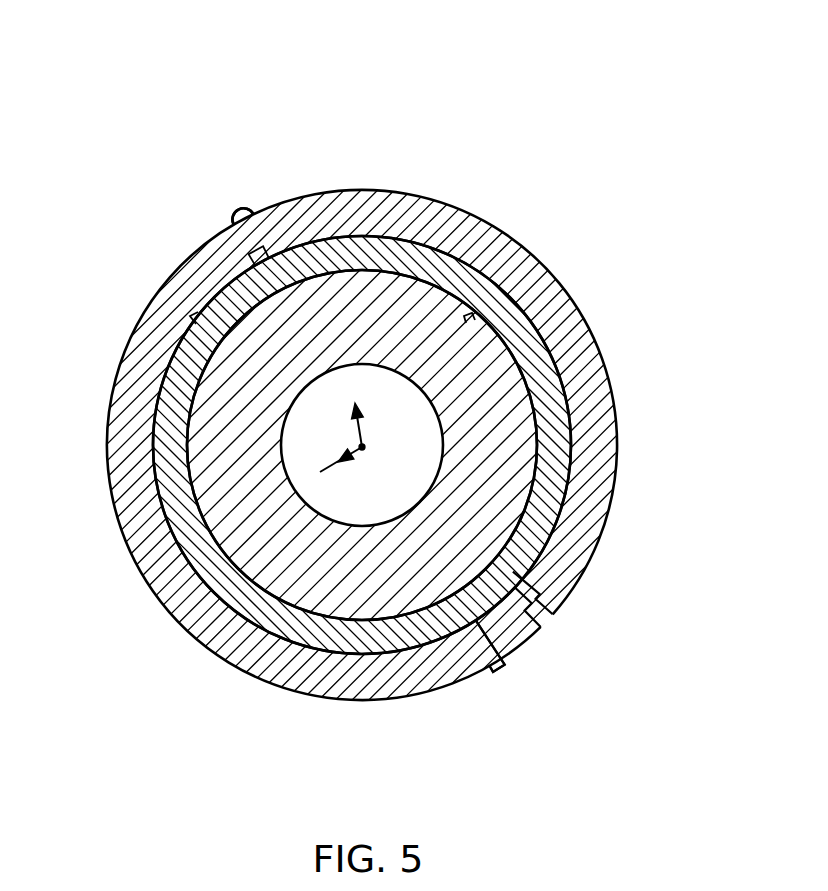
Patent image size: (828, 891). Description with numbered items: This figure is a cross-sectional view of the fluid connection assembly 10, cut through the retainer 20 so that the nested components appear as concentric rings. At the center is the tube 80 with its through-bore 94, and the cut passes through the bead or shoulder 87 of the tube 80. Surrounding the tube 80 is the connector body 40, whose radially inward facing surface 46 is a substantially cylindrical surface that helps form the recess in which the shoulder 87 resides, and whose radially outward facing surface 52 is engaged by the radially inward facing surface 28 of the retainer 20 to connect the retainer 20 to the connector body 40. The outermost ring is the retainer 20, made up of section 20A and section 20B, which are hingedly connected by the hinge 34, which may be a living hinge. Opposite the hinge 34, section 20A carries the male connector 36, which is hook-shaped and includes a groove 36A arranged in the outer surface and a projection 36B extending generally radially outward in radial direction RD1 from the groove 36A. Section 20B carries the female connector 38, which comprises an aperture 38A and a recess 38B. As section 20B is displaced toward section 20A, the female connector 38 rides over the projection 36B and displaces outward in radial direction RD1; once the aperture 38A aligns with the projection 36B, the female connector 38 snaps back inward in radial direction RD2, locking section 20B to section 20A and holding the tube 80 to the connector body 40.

The fluid connection assembly 10 is at (604, 112).
The retainer 20 is at (363, 414).
The section 20A is at (363, 414).
The section 20B is at (363, 445).
The radially inward facing surface 28 is at (197, 317).
The hinge 34 is at (245, 221).
The male connector 36 is at (381, 445).
The groove 36A is at (378, 445).
The projection 36B is at (522, 632).
The female connector 38 is at (465, 695).
The aperture 38A is at (454, 689).
The recess 38B is at (480, 650).
The connector body 40 is at (376, 399).
The radially inward facing surface 46 is at (472, 318).
The radially outward facing surface 52 is at (437, 245).
The tube 80 is at (425, 445).
The bead or shoulder 87 is at (423, 445).
The through-bore 94 is at (408, 456).
The radial direction RD1 is at (364, 433).
The radial direction RD2 is at (334, 462).